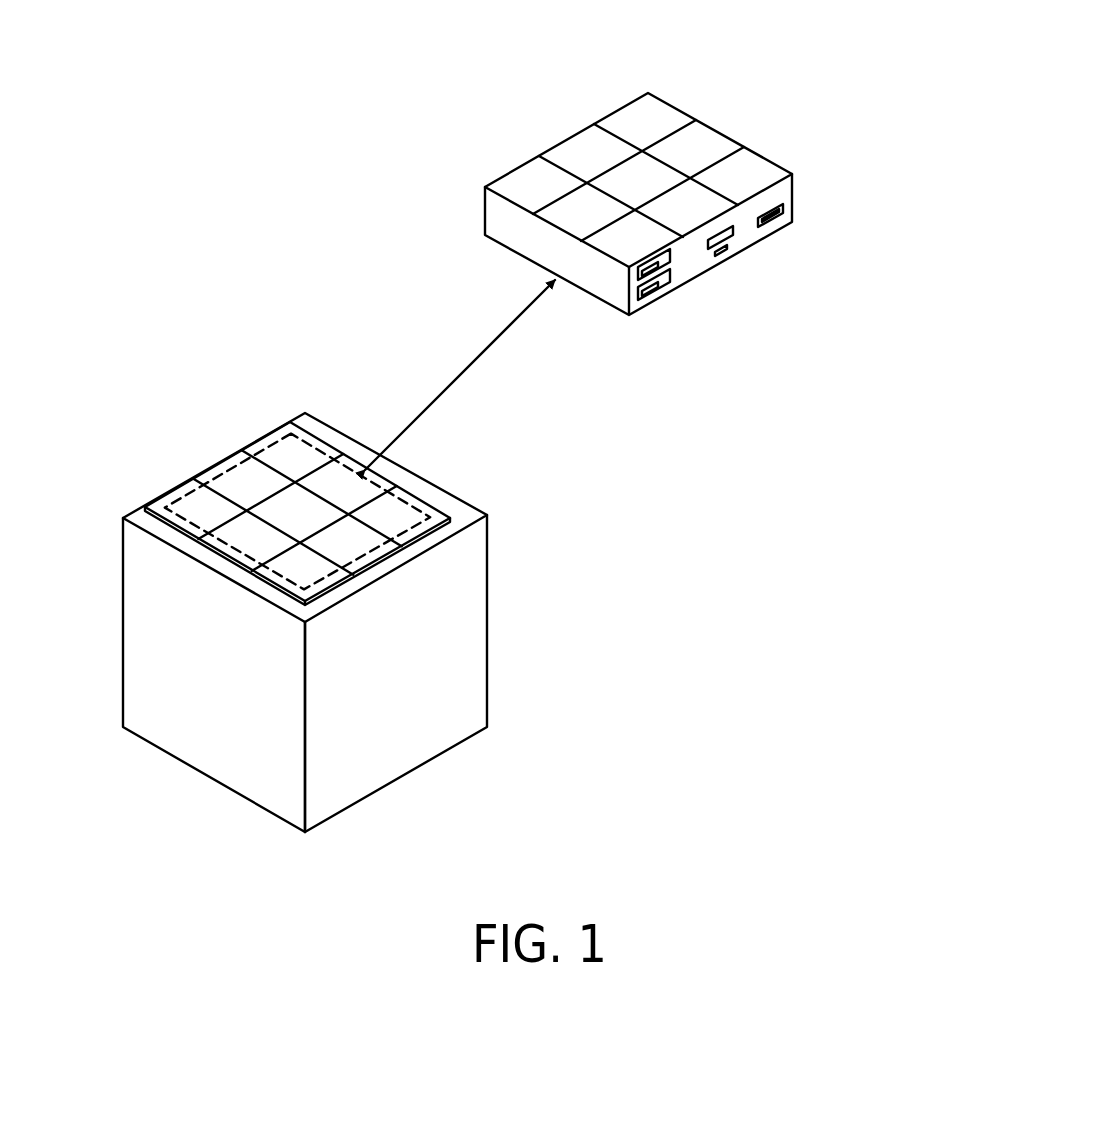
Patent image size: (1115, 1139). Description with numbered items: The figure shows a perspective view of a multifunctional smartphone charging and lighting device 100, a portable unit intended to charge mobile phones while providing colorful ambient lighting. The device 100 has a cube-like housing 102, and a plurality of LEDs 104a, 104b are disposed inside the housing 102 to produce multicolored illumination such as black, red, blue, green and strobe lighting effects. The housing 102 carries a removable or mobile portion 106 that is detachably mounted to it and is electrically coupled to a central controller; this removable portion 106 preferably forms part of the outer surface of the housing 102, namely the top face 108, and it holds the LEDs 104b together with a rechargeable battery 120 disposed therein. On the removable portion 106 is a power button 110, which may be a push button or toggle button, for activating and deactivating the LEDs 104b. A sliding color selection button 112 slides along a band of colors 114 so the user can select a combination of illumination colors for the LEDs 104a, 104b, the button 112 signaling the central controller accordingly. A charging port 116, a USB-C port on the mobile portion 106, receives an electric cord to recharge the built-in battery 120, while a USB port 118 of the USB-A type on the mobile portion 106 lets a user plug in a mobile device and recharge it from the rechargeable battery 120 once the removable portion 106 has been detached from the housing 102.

The multifunctional smartphone charging and lighting device 100 is at (168, 430).
The housing 102 is at (113, 571).
The LED 104a is at (448, 630).
The LED 104b is at (678, 106).
The removable portion 106 is at (315, 476).
The top face 108 is at (334, 438).
The power button 110 is at (656, 260).
The sliding color selection button 112 is at (652, 296).
The band of colors 114 is at (640, 291).
The charging port 116 is at (725, 255).
The USB port 118 is at (769, 226).
The rechargeable battery 120 is at (270, 440).